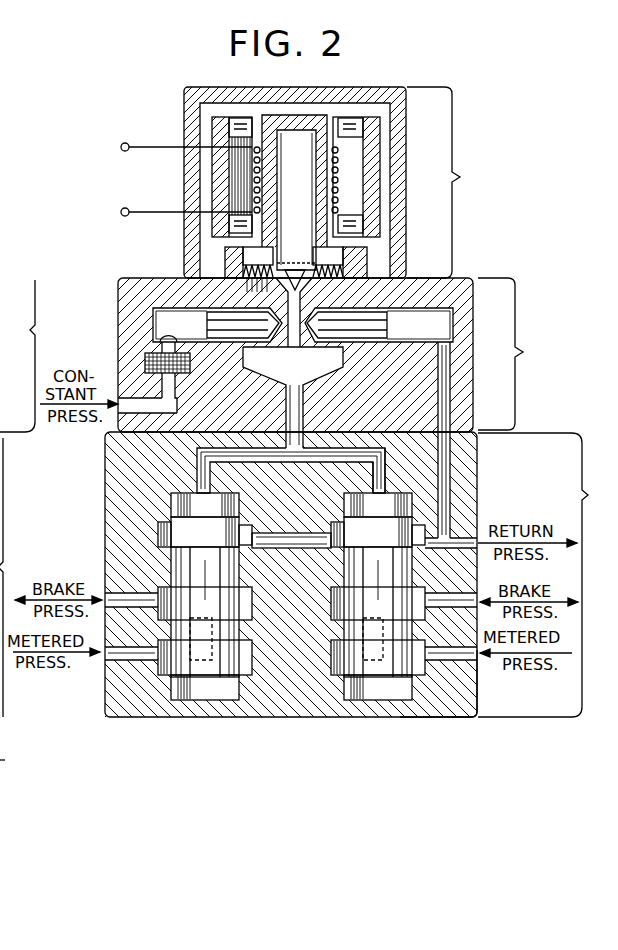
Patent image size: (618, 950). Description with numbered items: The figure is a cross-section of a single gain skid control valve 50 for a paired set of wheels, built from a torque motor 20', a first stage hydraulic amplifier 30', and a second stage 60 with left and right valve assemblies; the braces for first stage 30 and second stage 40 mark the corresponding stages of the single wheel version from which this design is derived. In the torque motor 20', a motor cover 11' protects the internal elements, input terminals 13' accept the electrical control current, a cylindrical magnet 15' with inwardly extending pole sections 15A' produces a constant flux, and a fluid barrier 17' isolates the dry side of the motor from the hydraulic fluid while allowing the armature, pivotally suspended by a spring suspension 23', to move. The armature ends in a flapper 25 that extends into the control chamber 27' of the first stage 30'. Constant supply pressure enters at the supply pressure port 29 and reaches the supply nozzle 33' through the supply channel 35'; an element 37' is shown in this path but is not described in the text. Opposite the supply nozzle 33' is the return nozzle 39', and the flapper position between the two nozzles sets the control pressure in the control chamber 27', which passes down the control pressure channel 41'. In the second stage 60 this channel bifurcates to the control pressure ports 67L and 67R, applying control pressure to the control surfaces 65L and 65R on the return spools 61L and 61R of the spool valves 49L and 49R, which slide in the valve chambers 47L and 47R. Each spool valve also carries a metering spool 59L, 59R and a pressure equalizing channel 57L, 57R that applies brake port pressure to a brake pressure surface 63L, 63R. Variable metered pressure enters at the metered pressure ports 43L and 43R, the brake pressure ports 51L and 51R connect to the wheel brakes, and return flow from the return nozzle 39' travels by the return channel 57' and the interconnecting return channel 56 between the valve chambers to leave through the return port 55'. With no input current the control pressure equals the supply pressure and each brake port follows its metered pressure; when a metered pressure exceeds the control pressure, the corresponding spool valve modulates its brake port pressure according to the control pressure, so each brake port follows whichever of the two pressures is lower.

The motor cover 11' is at (285, 167).
The input terminals 13' is at (177, 186).
The magnet 15' is at (329, 177).
The pole sections 15A' is at (337, 146).
The fluid barrier 17' is at (315, 172).
The torque motor 20' is at (449, 182).
The spring suspension 23' is at (332, 262).
The flapper 25 is at (298, 308).
The control chamber 27' is at (233, 290).
The supply pressure port 29 is at (150, 412).
The first stage 30 is at (31, 356).
The first stage hydraulic amplifier 30' is at (337, 355).
The supply nozzle 33' is at (217, 349).
The supply channel 35' is at (194, 374).
The filter screen 37' is at (157, 348).
The return nozzle 39' is at (379, 348).
The control pressure channel 41' is at (299, 397).
The second stage 40 is at (17, 599).
The left metered pressure port 43L is at (118, 652).
The right metered pressure port 43R is at (447, 661).
The left valve chamber 47L is at (172, 685).
The right valve chamber 47R is at (365, 688).
The left spool valve 49L is at (197, 563).
The right spool valve 49R is at (393, 624).
The skid control valve 50 is at (505, 760).
The left brake pressure port 51L is at (121, 603).
The right brake pressure port 51R is at (464, 598).
The return port 55' is at (451, 556).
The interconnecting return channel 56 is at (291, 538).
The return channel 57' is at (472, 440).
The left pressure equalizing channel 57L is at (245, 625).
The right pressure equalizing channel 57R is at (365, 652).
The left metering spool 59L is at (222, 688).
The right metering spool 59R is at (383, 688).
The second stage 60 is at (597, 508).
The left return spool 61L is at (221, 542).
The right return spool 61R is at (394, 542).
The left brake pressure surface 63L is at (195, 688).
The right brake pressure surface 63R is at (478, 705).
The left control pressure surface 65L is at (197, 508).
The right control pressure surface 65R is at (380, 508).
The left control pressure port 67L is at (212, 489).
The right control pressure port 67R is at (379, 485).